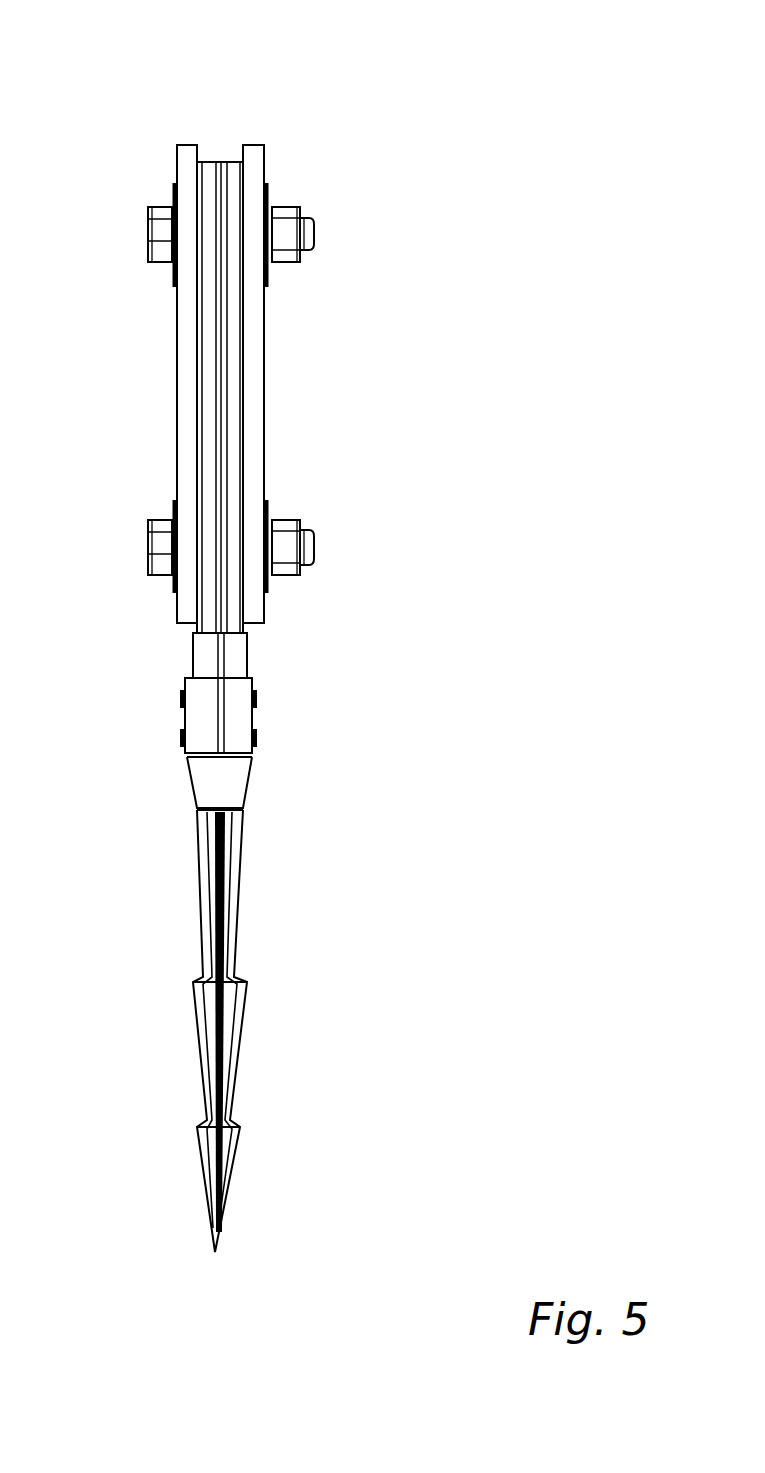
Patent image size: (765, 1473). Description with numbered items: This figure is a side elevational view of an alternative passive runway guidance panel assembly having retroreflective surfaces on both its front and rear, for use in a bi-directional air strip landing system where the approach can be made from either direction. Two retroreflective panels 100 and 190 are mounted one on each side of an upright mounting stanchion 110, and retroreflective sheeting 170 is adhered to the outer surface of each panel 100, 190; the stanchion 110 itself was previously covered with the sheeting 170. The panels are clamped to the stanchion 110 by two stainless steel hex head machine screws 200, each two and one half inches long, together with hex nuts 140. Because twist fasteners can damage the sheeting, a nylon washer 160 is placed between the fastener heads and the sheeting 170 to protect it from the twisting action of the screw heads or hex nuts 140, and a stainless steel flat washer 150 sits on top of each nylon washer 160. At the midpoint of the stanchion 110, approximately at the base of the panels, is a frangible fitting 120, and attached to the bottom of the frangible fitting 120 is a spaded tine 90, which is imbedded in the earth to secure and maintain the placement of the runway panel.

The spaded tine 90 is at (233, 958).
The aluminum panel 100 is at (189, 145).
The upright mounting stanchion 110 is at (222, 162).
The frangible fitting 120 is at (253, 720).
The hex nut 140 is at (302, 210).
The stainless steel flat washer 150 is at (172, 193).
The nylon washer 160 is at (174, 185).
The retroreflective sheeting 170 is at (225, 334).
The retroreflective panel 190 is at (253, 145).
The hex head machine screw 200 is at (148, 230).